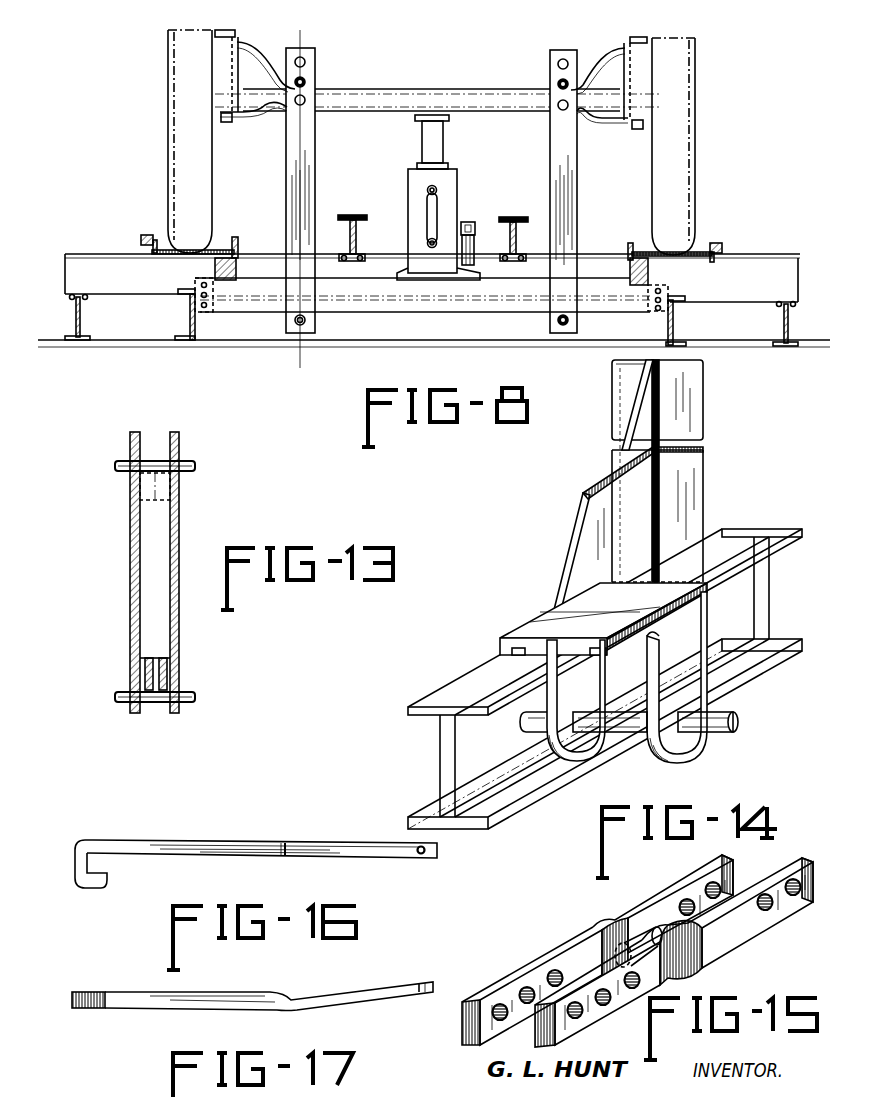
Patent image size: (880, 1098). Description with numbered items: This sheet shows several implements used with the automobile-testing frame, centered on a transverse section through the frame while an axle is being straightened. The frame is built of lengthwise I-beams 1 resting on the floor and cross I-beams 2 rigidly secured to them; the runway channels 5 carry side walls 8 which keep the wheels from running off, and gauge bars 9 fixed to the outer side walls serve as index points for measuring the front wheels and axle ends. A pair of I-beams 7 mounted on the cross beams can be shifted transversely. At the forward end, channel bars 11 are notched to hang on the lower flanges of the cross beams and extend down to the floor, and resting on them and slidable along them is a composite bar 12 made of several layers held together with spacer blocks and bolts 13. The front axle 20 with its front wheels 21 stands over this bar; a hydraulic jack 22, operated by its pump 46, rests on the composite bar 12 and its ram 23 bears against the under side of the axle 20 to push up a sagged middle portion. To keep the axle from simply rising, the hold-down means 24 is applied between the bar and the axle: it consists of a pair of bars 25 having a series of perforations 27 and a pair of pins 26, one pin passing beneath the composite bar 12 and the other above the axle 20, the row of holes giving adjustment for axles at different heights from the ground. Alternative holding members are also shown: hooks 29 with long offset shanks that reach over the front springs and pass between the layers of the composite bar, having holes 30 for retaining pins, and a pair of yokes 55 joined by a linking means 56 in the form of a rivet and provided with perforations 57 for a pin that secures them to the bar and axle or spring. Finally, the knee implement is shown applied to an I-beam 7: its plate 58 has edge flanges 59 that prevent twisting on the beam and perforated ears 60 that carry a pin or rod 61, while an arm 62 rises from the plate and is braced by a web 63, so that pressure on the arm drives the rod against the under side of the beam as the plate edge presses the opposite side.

In FIG. 8, the I-beams 1 is at (74, 322).
In FIG. 8, the cross I-beams 2 is at (790, 288).
In FIG. 8, the channels 5 is at (221, 256).
In FIG. 8, the I-beams 7 is at (357, 239).
In FIG. 14, the I-beams 7 is at (466, 741).
In FIG. 8, the side walls 8 is at (154, 244).
In FIG. 8, the gauge bars 9 is at (141, 240).
In FIG. 8, the channel bars 11 is at (189, 328).
In FIG. 8, the composite bar 12 is at (493, 317).
In FIG. 13, the composite bar 12 is at (165, 673).
In FIG. 8, the bolts 13 is at (640, 331).
In FIG. 8, the front axle 20 is at (487, 98).
In FIG. 13, the front axle 20 is at (160, 488).
In FIG. 8, the front wheels 21 is at (178, 147).
In FIG. 8, the jack 22 is at (452, 193).
In FIG. 8, the ram 23 is at (442, 143).
In FIG. 8, the hold-down means 24 is at (294, 173).
In FIG. 13, the hold-down means 24 is at (130, 551).
In FIG. 13, the bars 25 is at (180, 546).
In FIG. 8, the pins 26 is at (306, 82).
In FIG. 13, the pins 26 is at (196, 466).
In FIG. 8, the perforations 27 is at (305, 61).
In FIG. 13, the perforations 27 is at (172, 432).
In FIG. 16, the hooks 29 is at (195, 845).
In FIG. 17, the hooks 29 is at (147, 1003).
In FIG. 16, the holes 30 is at (422, 855).
In FIG. 17, the holes 30 is at (423, 982).
In FIG. 8, the pump 46 is at (468, 240).
In FIG. 15, the yokes 55 is at (565, 947).
In FIG. 15, the linking means 56 is at (628, 936).
In FIG. 15, the perforations 57 is at (792, 896).
In FIG. 14, the plate 58 is at (543, 617).
In FIG. 14, the flanges 59 is at (512, 652).
In FIG. 14, the ears 60 is at (627, 677).
In FIG. 14, the pin or rod 61 is at (738, 727).
In FIG. 14, the arm 62 is at (685, 464).
In FIG. 14, the web 63 is at (600, 497).